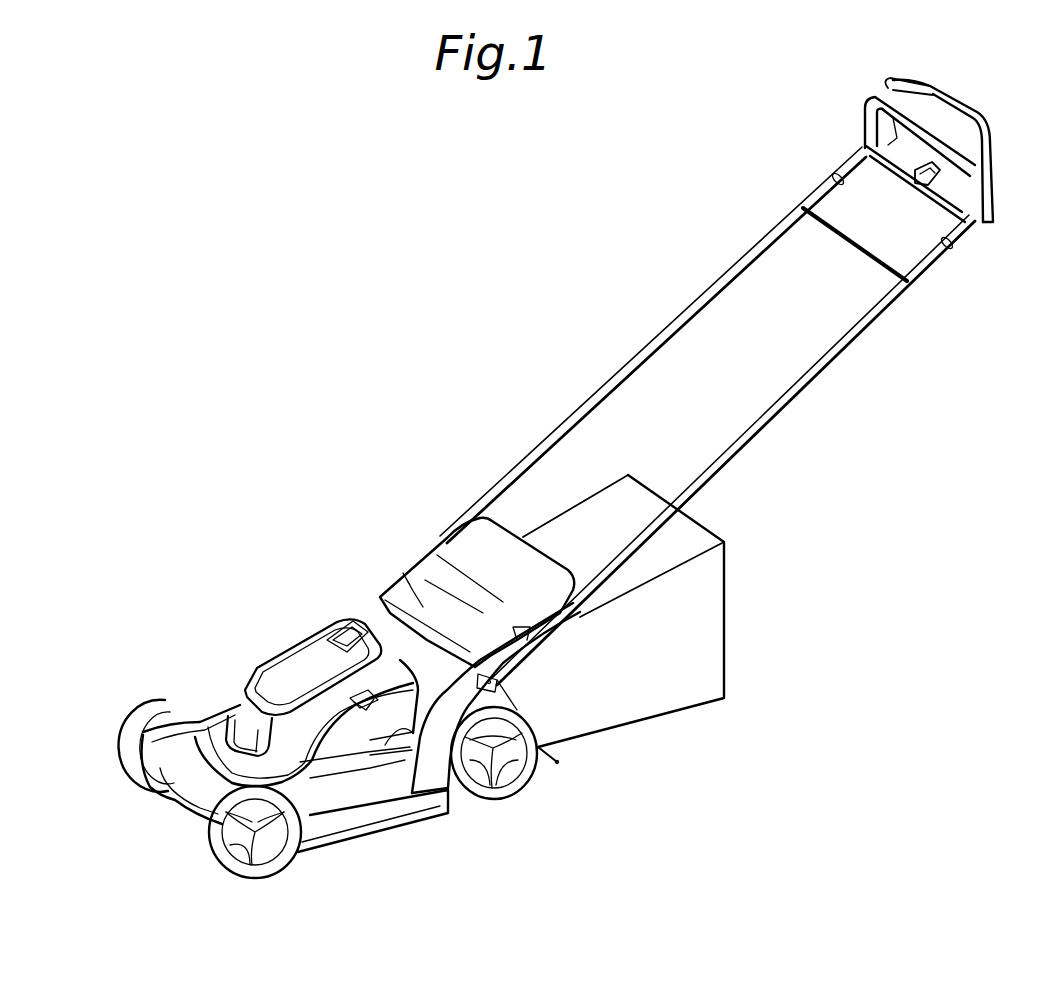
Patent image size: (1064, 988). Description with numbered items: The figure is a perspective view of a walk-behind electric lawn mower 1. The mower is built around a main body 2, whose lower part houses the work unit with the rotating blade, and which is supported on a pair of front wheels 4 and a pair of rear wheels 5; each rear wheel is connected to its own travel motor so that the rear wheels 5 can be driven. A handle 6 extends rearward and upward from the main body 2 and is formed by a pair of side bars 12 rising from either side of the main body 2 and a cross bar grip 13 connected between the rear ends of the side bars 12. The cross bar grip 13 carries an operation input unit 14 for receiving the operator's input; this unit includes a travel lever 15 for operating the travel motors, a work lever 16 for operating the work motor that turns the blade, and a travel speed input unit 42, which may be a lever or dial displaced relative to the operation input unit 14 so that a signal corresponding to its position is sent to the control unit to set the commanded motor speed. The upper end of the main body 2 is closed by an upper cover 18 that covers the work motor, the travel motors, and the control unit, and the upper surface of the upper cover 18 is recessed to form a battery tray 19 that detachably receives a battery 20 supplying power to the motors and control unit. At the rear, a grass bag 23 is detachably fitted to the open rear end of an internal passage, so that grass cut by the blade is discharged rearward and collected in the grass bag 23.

The electric lawn mower 1 is at (375, 472).
The main body 2 is at (192, 792).
The front wheels 4 is at (140, 712).
The rear wheels 5 is at (507, 795).
The handle 6 is at (925, 307).
The side bars 12 is at (637, 360).
The cross bar grip 13 is at (872, 95).
The operation input unit 14 is at (988, 105).
The travel lever 15 is at (893, 80).
The work lever 16 is at (992, 144).
The upper cover 18 is at (320, 740).
The battery tray 19 is at (242, 715).
The battery 20 is at (303, 657).
The grass bag 23 is at (708, 630).
The travel speed input unit 42 is at (948, 178).